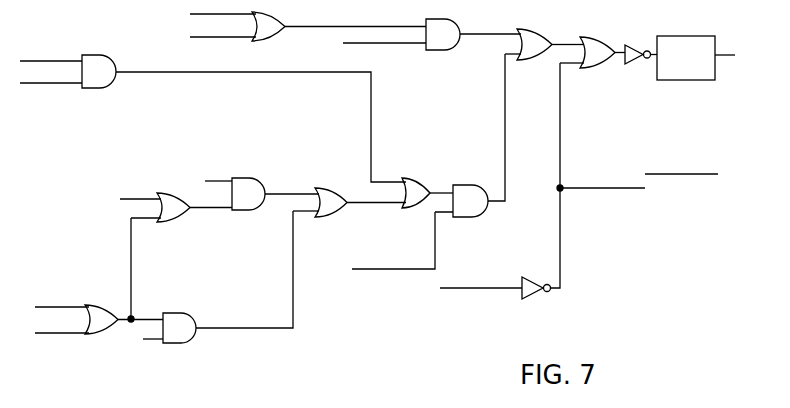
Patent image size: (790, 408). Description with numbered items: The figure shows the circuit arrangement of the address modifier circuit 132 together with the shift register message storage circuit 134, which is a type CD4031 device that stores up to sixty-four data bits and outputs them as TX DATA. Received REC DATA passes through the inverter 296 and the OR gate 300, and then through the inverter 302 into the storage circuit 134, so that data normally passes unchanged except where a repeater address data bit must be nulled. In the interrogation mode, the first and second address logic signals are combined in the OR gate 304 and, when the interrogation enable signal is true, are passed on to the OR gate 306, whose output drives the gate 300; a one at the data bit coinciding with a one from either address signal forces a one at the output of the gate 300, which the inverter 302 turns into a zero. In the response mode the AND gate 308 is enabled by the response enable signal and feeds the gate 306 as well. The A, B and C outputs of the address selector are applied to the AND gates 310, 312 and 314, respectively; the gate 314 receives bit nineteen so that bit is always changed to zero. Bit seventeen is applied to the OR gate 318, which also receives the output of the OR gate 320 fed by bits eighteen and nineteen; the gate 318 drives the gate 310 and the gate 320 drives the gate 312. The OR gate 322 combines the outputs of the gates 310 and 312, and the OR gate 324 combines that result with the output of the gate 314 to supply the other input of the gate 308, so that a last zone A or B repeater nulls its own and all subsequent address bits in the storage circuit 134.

The address modifier circuit 132 is at (318, 379).
The shift register message storage circuit 134 is at (688, 80).
The inverter 296 is at (530, 299).
The OR gate 300 is at (586, 41).
The inverter 302 is at (455, 23).
The OR gate 304 is at (287, 23).
The OR gate 306 is at (531, 31).
The AND gate 308 is at (478, 218).
The AND gate 310 is at (240, 211).
The AND gate 312 is at (189, 318).
The AND gate 314 is at (110, 88).
The OR gate 318 is at (170, 223).
The OR gate 320 is at (92, 335).
The OR gate 322 is at (326, 218).
The OR gate 324 is at (413, 179).